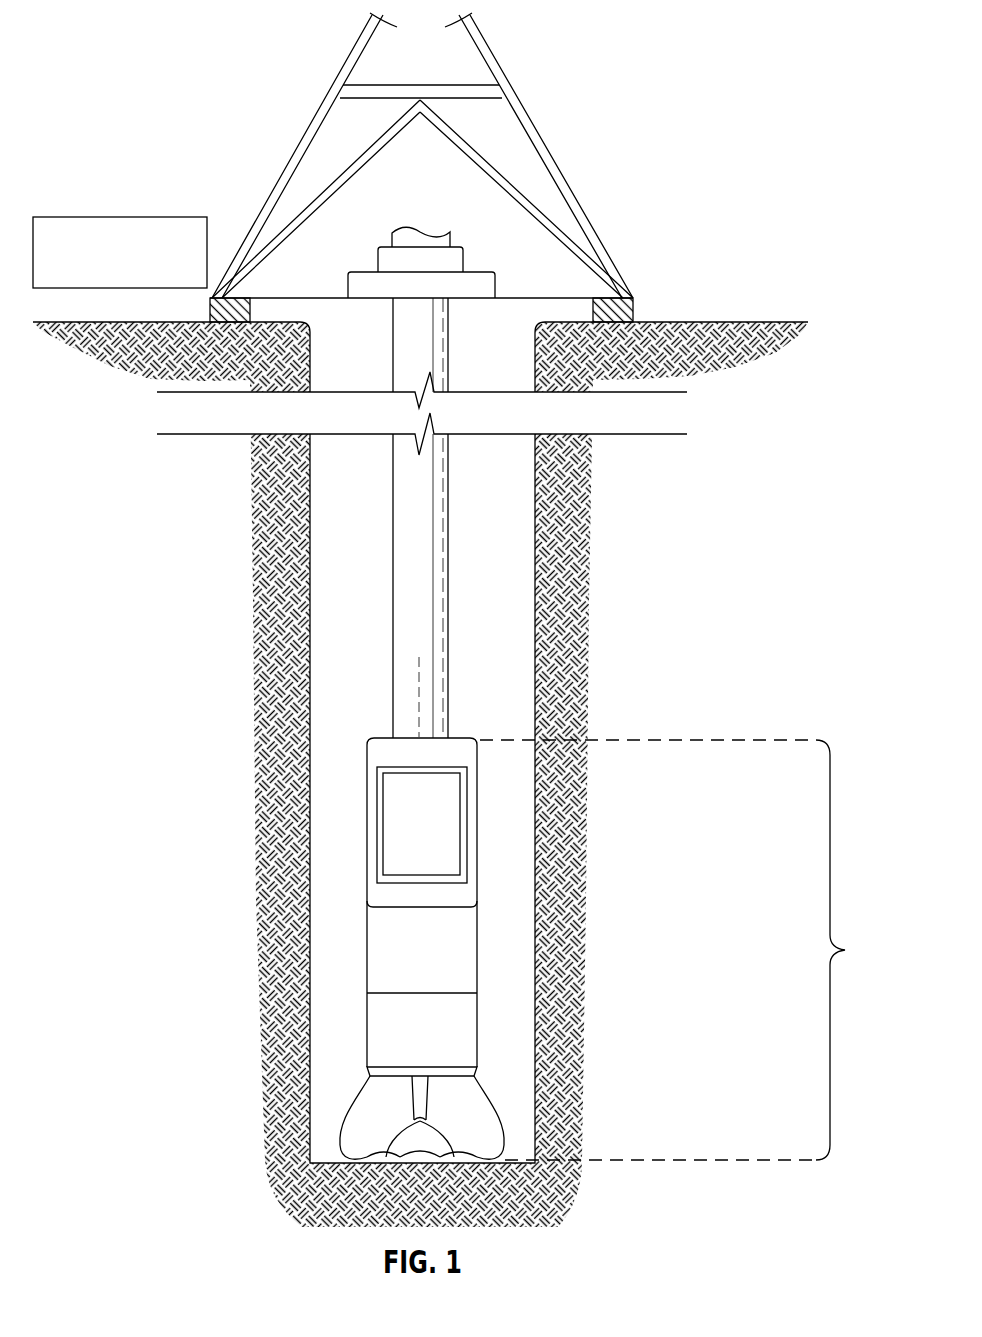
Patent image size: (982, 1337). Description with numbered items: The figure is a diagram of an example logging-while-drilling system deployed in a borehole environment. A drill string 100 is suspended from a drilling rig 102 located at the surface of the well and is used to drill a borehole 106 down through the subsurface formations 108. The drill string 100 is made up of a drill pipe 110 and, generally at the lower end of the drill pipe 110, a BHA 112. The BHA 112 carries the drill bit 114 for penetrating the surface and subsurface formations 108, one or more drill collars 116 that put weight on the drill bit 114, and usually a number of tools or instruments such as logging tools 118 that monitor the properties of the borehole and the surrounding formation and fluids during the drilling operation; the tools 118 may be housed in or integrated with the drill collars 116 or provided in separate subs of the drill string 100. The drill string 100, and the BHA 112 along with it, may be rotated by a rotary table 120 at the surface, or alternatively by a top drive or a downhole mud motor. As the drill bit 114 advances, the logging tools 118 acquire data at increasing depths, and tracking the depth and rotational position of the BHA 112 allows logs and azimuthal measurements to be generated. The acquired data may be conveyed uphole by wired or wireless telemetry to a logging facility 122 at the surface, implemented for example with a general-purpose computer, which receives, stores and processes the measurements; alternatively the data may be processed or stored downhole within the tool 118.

The drill string 100 is at (525, 588).
The drilling rig 102 is at (574, 147).
The borehole 106 is at (500, 592).
The subsurface formations 108 is at (188, 609).
The drill pipe 110 is at (452, 715).
The BHA 112 is at (686, 950).
The drill bit 114 is at (340, 1130).
The drill collars 116 is at (386, 755).
The logging tools 118 is at (460, 845).
The rotary table 120 is at (477, 271).
The logging facility 122 is at (102, 217).